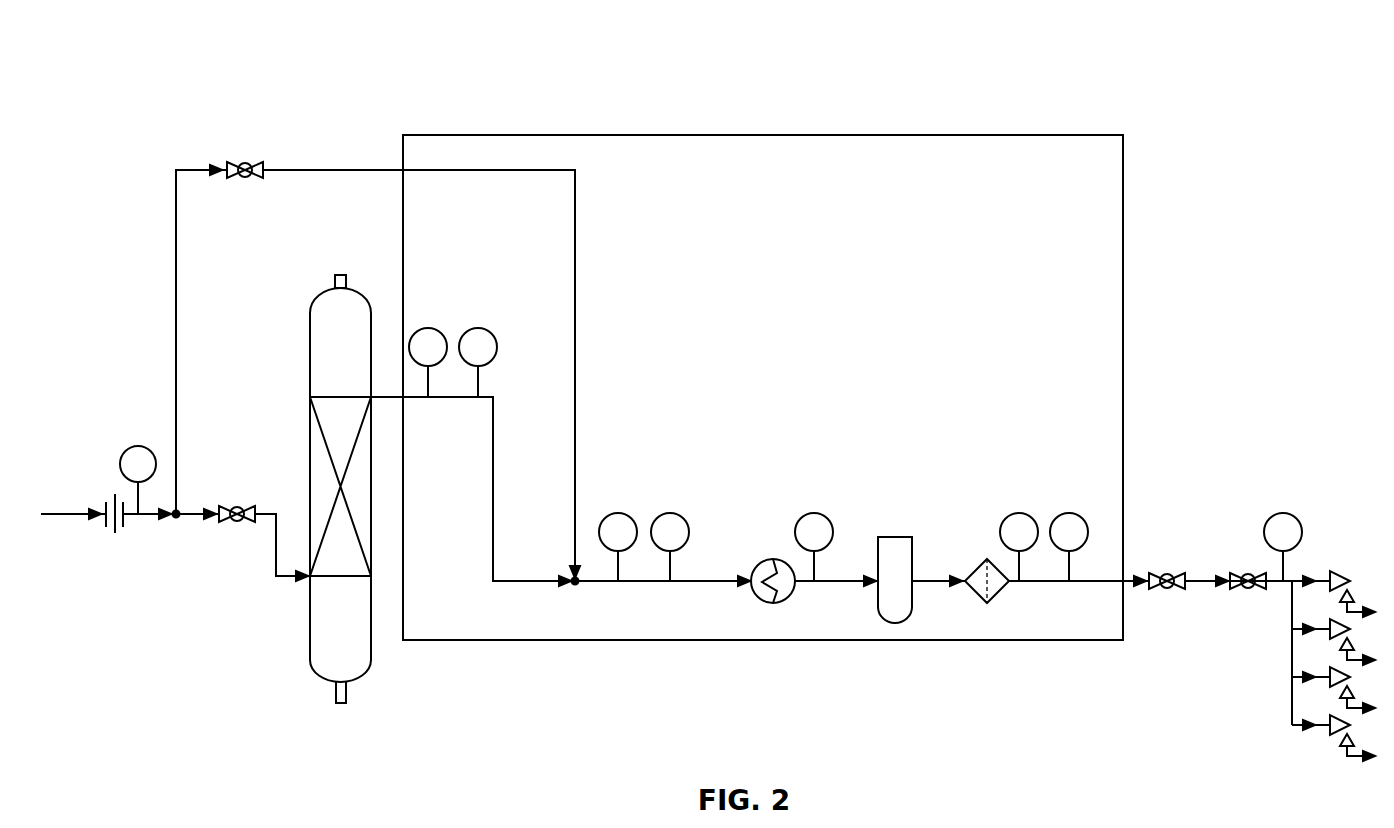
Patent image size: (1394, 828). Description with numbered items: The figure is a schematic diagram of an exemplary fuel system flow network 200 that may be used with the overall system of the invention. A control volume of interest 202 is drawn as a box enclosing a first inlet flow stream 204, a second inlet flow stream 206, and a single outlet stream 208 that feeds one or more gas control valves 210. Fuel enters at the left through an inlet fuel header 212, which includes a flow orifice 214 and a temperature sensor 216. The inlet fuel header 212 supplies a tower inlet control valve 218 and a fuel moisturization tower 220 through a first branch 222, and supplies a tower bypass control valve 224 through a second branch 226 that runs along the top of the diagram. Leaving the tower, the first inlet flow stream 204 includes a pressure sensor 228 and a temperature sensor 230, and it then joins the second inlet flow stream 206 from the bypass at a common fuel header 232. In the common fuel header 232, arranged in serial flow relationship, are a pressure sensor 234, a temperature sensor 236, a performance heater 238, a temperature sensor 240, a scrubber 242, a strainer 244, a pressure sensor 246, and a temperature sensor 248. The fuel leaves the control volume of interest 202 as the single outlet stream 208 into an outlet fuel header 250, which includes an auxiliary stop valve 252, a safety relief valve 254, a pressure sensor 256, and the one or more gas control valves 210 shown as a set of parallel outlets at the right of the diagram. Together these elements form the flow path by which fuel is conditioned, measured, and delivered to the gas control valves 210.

The fuel system flow network 200 is at (117, 62).
The control volume of interest 202 is at (1123, 228).
The first inlet flow stream 204 is at (403, 398).
The second inlet flow stream 206 is at (435, 170).
The single outlet stream 208 is at (1028, 581).
The gas control valves 210 is at (1270, 692).
The inlet fuel header 212 is at (67, 515).
The flow orifice 214 is at (103, 507).
The temperature sensor 216 is at (137, 446).
The tower inlet control valve 218 is at (242, 505).
The fuel moisturization tower 220 is at (322, 292).
The first branch 222 is at (282, 597).
The tower bypass control valve 224 is at (245, 162).
The second branch 226 is at (322, 163).
The pressure sensor 228 is at (428, 328).
The temperature sensor 230 is at (478, 328).
The common fuel header 232 is at (598, 581).
The pressure sensor 234 is at (618, 513).
The temperature sensor 236 is at (670, 513).
The performance heater 238 is at (760, 563).
The temperature sensor 240 is at (813, 511).
The scrubber 242 is at (895, 537).
The strainer 244 is at (987, 559).
The pressure sensor 246 is at (1019, 513).
The temperature sensor 248 is at (1069, 513).
The outlet fuel header 250 is at (1200, 560).
The auxiliary stop valve 252 is at (1167, 592).
The safety relief valve 254 is at (1248, 592).
The pressure sensor 256 is at (1283, 513).